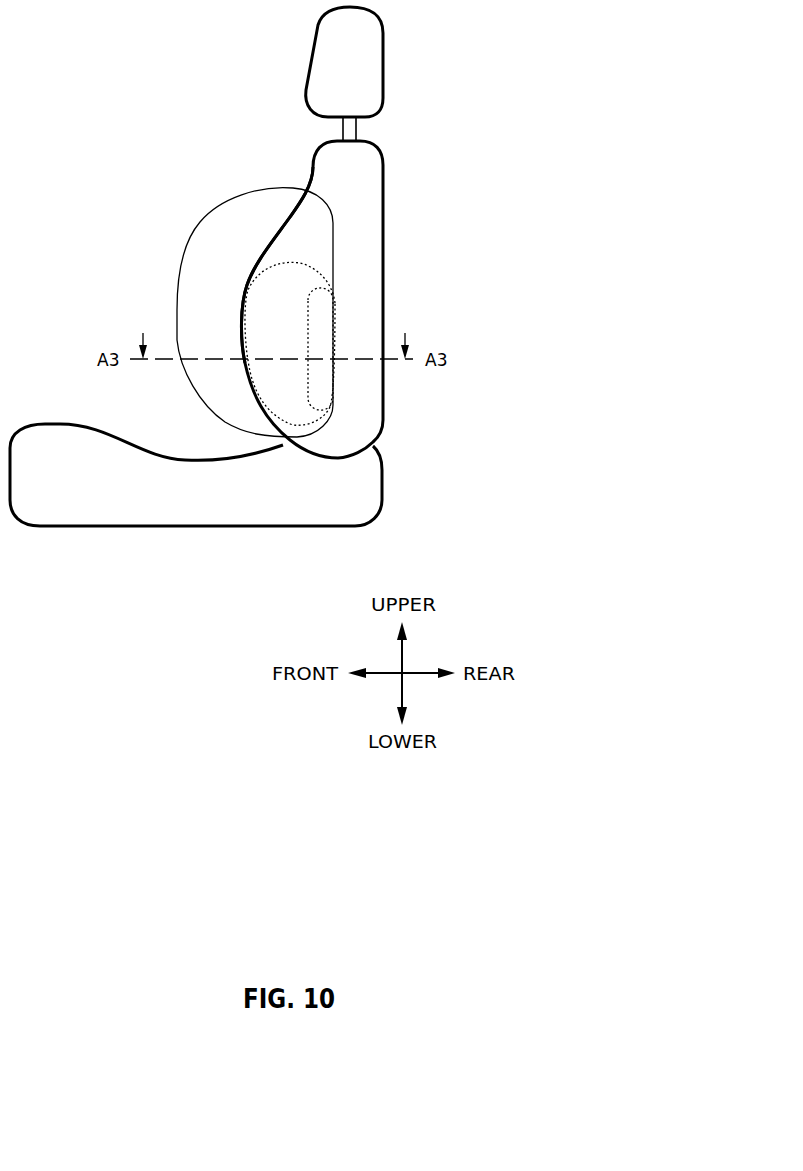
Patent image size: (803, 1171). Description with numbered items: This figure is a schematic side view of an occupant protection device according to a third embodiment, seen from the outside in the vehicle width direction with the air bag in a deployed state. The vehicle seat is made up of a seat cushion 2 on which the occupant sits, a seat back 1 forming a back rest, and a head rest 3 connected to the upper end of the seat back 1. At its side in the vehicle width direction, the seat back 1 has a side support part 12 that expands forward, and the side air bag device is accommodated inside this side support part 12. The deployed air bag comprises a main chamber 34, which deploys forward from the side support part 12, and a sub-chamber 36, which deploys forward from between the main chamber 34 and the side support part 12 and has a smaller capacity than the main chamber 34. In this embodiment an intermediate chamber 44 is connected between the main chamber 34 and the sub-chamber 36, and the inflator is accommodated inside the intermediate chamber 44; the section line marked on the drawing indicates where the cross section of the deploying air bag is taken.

The seat back 1 is at (383, 165).
The seat cushion 2 is at (183, 517).
The head rest 3 is at (383, 53).
The side support part 12 is at (254, 264).
The main chamber 34 is at (235, 200).
The sub-chamber 36 is at (313, 280).
The intermediate chamber 44 is at (334, 327).